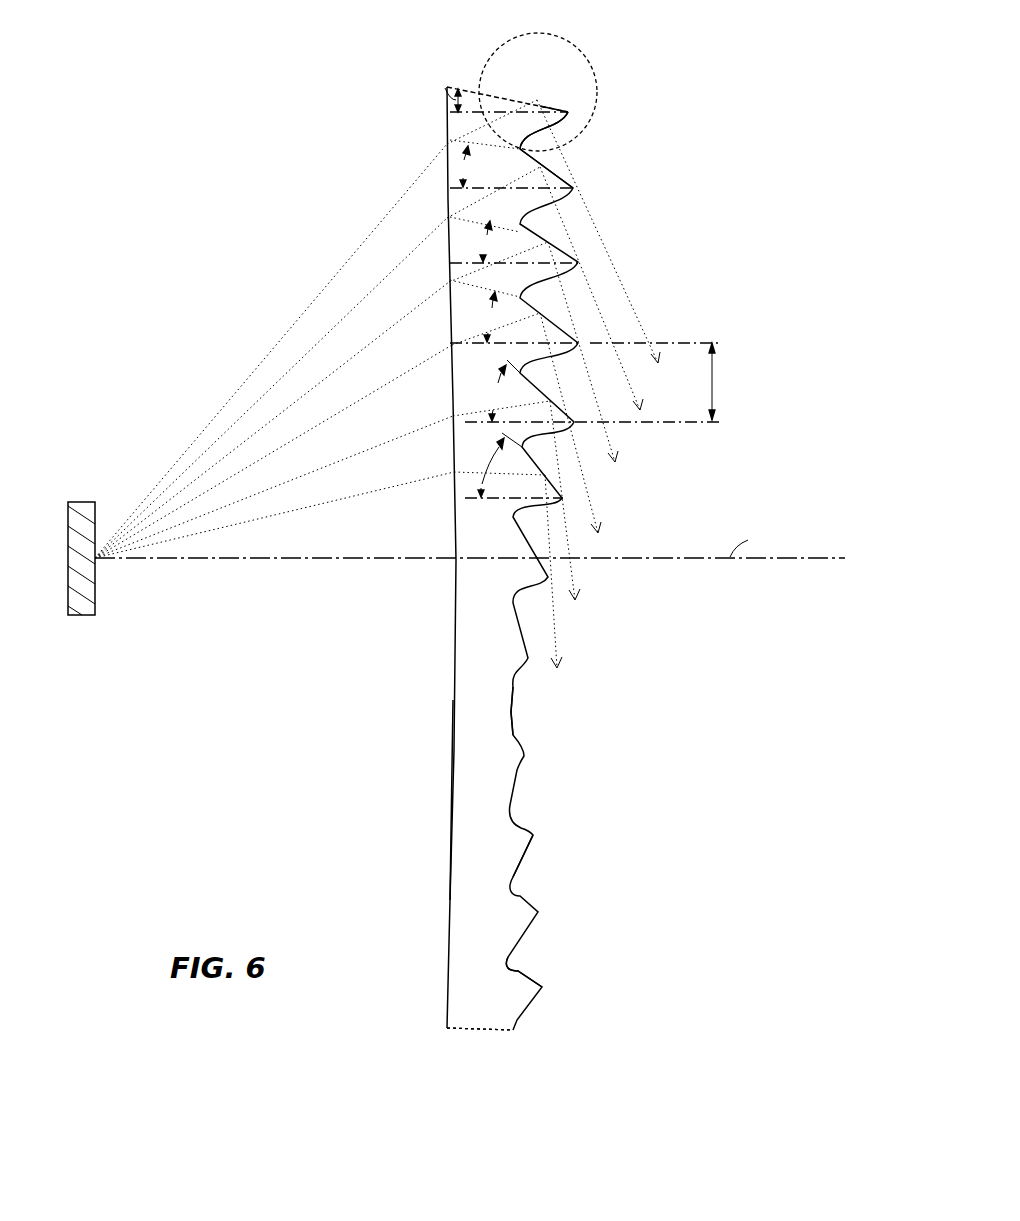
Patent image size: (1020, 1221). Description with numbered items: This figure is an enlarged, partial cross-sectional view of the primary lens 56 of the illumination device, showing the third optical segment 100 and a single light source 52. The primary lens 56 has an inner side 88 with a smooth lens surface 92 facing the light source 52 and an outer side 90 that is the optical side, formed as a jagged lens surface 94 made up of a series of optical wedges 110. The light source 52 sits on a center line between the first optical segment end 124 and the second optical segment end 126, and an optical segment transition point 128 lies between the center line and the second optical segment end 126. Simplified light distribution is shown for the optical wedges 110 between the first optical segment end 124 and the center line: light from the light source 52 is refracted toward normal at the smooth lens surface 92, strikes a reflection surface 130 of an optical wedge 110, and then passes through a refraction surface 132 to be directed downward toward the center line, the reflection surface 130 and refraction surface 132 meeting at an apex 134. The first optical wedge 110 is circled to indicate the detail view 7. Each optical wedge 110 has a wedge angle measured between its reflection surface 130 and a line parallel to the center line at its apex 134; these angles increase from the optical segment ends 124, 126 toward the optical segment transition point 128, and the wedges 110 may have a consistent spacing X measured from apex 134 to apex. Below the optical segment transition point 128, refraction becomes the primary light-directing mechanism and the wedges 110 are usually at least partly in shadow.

The enlarged view circle (FIG. 7 detail) 7 is at (577, 38).
The light source 52 is at (75, 518).
The primary lens 56 is at (450, 973).
The inner side 88 is at (456, 668).
The outer side 90 is at (513, 870).
The smooth lens surface 92 is at (450, 877).
The jagged lens surface 94 is at (517, 967).
The third optical segment 100 is at (253, 151).
The optical wedge 110 is at (507, 98).
The first optical segment end 124 is at (463, 76).
The second optical segment end 126 is at (490, 1030).
The optical segment transition point 128 is at (512, 710).
The reflection surface 130 is at (537, 97).
The refraction surface 132 is at (562, 128).
The apex 134 is at (572, 112).